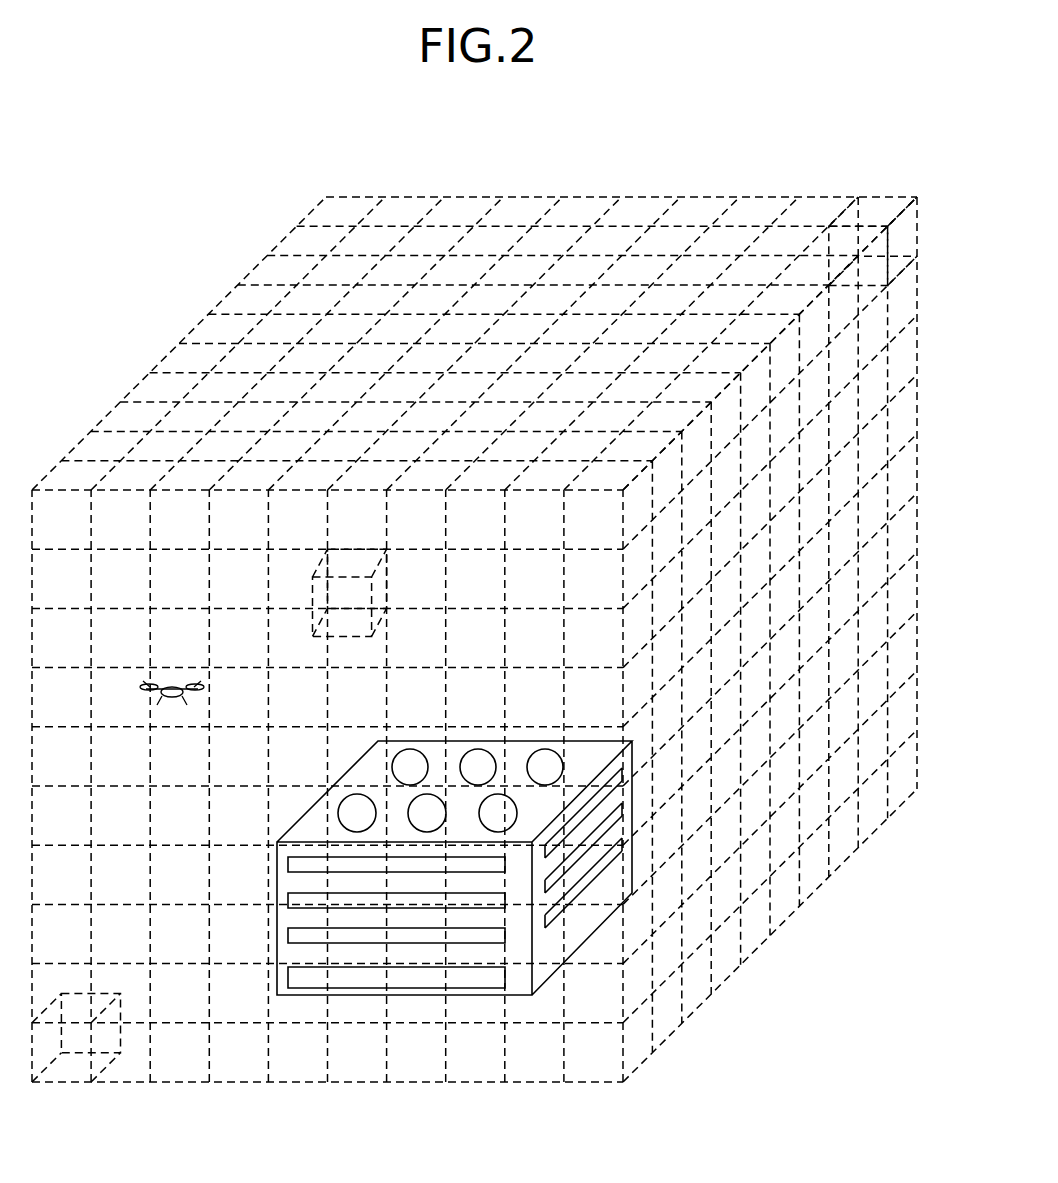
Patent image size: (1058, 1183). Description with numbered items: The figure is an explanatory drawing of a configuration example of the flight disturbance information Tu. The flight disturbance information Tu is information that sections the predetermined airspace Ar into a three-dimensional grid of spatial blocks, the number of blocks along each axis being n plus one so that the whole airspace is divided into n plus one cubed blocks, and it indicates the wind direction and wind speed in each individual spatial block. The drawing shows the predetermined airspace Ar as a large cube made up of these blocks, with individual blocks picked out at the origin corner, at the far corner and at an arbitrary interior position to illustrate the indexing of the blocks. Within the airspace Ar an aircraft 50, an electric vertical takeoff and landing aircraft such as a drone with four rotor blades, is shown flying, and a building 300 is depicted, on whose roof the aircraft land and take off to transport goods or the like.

The aircraft 50 is at (173, 688).
The building 300 is at (516, 983).
The predetermined airspace Ar is at (418, 318).
The flight disturbance information Tu is at (522, 185).